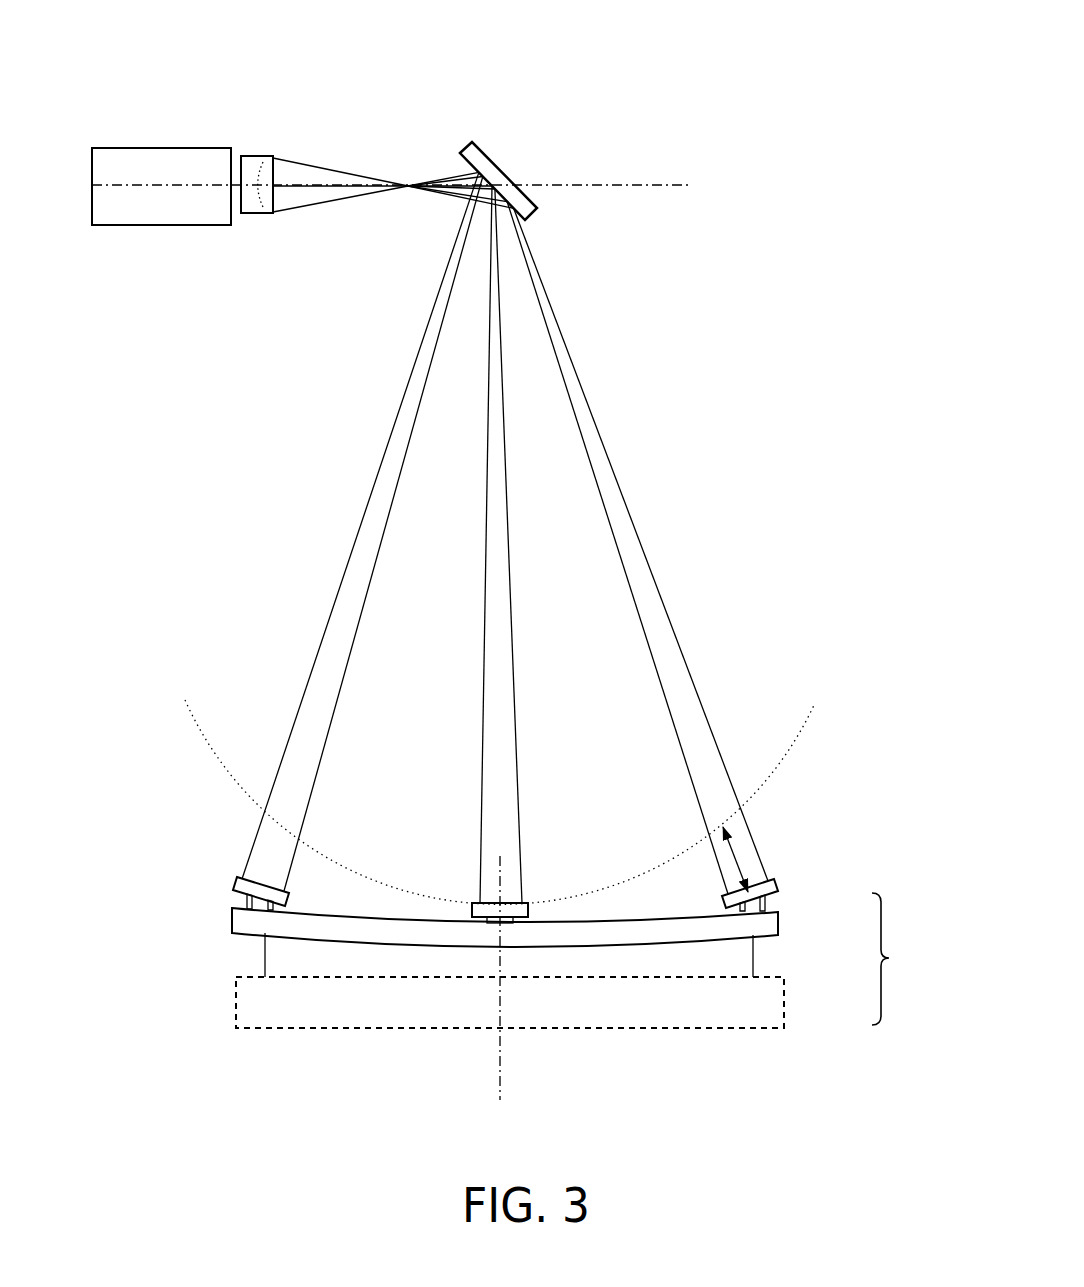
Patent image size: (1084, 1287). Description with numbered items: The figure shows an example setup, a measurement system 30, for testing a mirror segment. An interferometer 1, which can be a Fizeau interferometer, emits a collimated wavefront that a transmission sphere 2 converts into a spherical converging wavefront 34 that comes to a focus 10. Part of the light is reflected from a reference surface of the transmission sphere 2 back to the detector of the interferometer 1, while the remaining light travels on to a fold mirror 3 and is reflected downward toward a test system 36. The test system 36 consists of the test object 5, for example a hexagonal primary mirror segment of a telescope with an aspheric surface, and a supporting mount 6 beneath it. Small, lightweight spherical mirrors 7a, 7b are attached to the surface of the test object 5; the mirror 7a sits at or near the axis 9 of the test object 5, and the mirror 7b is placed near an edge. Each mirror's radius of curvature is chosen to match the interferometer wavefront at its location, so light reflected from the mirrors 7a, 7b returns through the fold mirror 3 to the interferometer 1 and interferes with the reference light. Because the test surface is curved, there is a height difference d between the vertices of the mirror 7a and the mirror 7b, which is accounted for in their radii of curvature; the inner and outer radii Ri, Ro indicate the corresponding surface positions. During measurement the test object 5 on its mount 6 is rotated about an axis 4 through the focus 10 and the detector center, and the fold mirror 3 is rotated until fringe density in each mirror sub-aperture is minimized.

The interferometer 1 is at (116, 179).
The transmission sphere 2 is at (250, 216).
The fold mirror 3 is at (510, 168).
The axis 4 is at (404, 187).
The test object 5 is at (308, 931).
The supporting mount 6 is at (658, 1014).
The spherical mirror 7a is at (471, 915).
The spherical mirror 7b is at (781, 894).
The axis of the test object 9 is at (511, 980).
The focus 10 is at (412, 192).
The measurement system 30 is at (673, 87).
The spherical converging wavefront 34 is at (307, 165).
The test system 36 is at (898, 959).
The inner radius Ri is at (518, 794).
The outer radius Ro is at (805, 877).
The height difference d is at (744, 850).